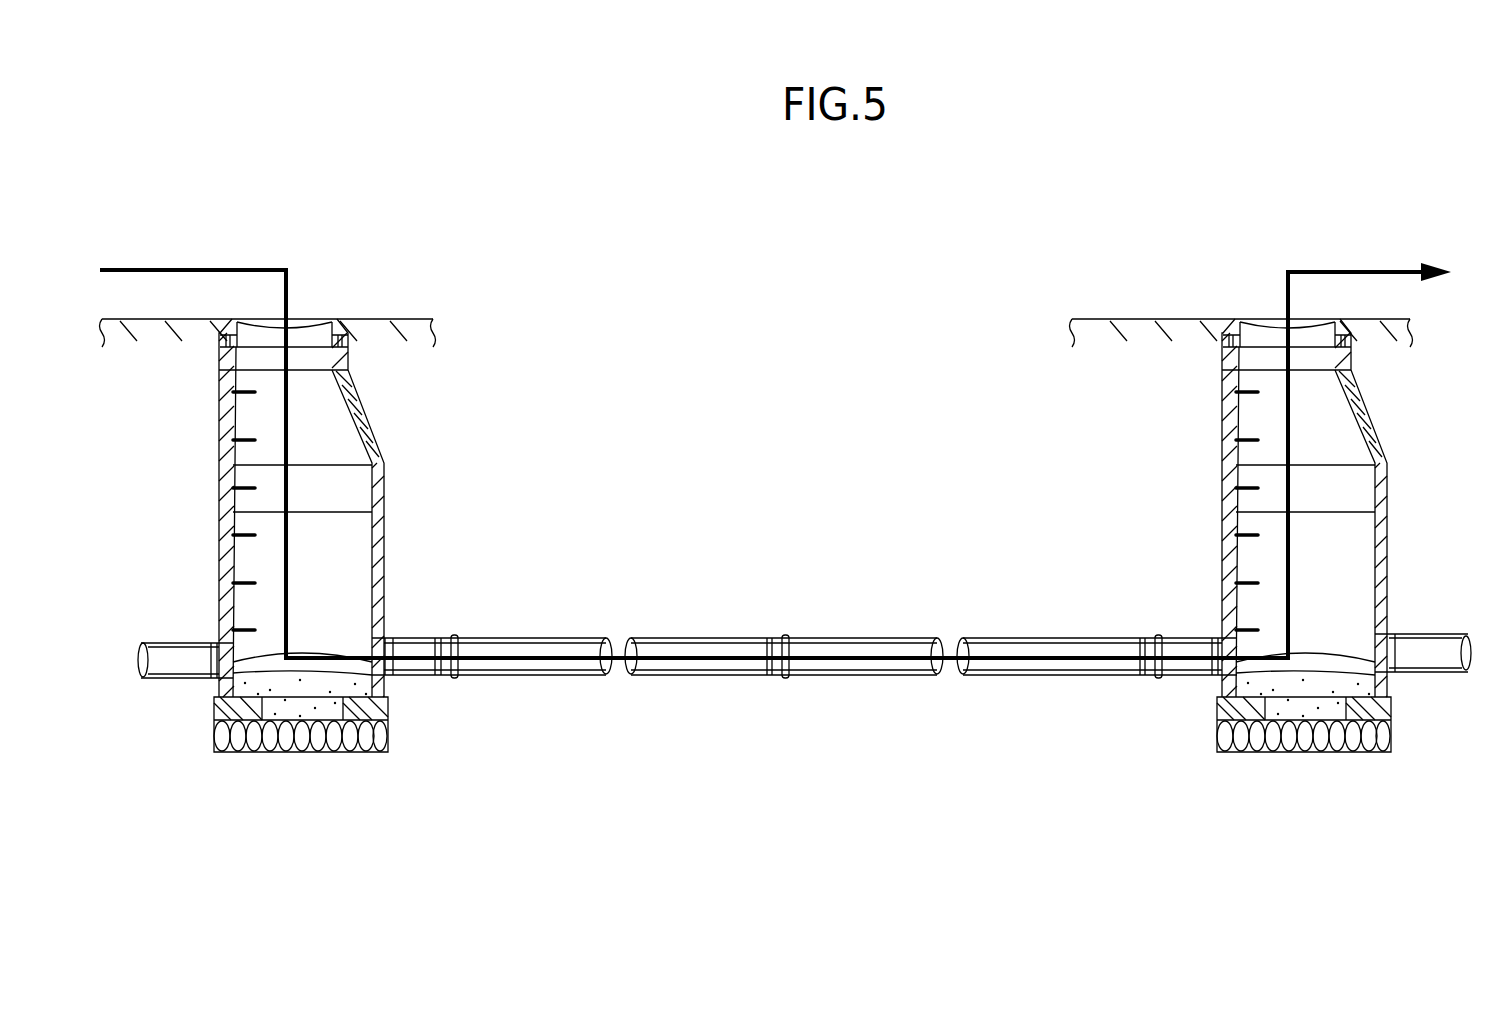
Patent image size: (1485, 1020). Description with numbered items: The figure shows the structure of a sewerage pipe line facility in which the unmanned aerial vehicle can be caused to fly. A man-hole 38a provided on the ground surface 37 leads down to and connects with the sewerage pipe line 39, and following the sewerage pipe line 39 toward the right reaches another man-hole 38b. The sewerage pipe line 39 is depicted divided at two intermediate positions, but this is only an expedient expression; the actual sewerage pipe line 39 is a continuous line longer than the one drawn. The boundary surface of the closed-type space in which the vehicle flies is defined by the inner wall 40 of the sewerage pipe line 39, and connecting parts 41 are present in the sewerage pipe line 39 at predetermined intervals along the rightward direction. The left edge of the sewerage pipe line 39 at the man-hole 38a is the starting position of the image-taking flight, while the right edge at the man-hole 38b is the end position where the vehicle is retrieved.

The ground surface 37 is at (403, 317).
The man-hole 38a is at (303, 317).
The man-hole 38b is at (1272, 317).
The sewerage pipe line 39 is at (687, 663).
The inner wall 40 is at (880, 675).
The connecting parts 41 is at (455, 636).